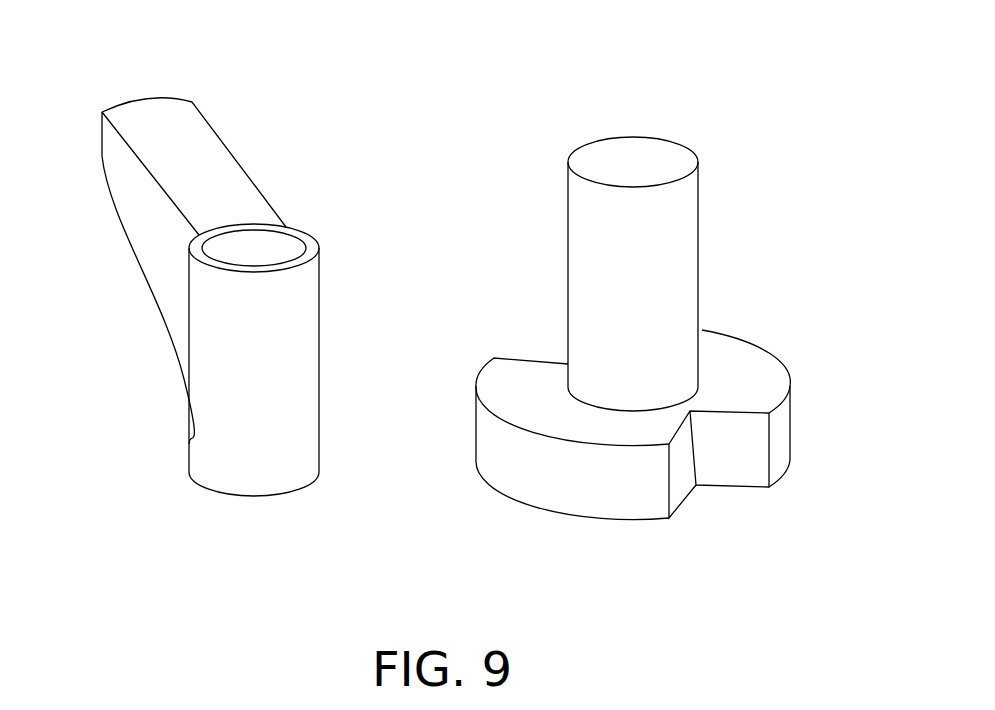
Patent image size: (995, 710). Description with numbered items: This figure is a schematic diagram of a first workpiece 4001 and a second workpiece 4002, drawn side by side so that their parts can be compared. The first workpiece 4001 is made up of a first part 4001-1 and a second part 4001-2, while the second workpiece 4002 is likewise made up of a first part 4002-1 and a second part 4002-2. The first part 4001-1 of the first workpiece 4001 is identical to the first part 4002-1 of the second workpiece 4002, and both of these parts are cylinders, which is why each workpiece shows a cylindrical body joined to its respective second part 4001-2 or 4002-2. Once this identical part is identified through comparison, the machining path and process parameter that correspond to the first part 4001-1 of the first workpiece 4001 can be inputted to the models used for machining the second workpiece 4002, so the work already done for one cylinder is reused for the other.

The first workpiece 4001 is at (79, 48).
The first part of the first workpiece 4001-1 is at (258, 412).
The second part of the first workpiece 4001-2 is at (207, 169).
The second workpiece 4002 is at (853, 71).
The first part of the second workpiece 4002-1 is at (674, 228).
The second part of the second workpiece 4002-2 is at (727, 454).